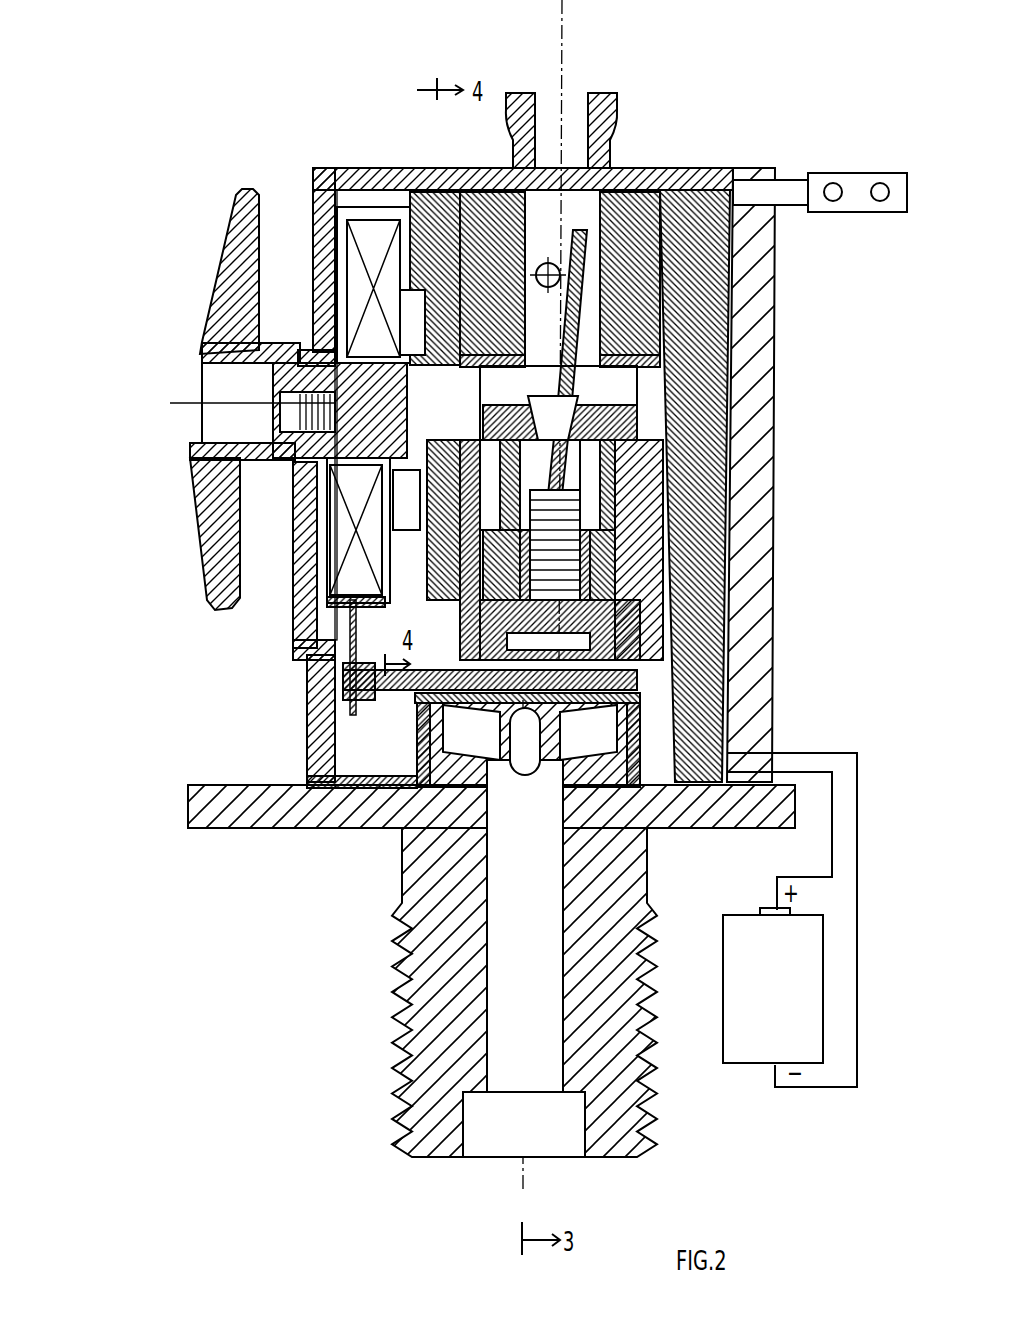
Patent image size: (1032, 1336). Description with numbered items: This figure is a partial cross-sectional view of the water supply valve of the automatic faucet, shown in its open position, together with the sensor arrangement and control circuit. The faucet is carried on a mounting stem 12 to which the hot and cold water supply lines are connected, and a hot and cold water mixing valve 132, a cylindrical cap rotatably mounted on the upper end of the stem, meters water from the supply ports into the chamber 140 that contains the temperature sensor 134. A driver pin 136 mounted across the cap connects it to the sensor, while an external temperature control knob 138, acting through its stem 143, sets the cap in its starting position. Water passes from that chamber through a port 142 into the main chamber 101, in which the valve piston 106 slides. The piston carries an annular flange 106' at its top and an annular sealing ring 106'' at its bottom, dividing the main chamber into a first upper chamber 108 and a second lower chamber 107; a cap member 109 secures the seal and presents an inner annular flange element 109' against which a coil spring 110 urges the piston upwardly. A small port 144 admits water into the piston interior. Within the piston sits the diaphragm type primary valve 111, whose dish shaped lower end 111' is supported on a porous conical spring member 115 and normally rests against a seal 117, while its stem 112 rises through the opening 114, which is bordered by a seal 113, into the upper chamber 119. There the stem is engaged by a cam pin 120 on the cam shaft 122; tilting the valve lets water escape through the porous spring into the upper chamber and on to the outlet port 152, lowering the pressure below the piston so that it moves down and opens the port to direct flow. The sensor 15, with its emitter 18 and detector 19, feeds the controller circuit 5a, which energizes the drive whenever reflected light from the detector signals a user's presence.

The mounting stem 12 is at (433, 865).
The sensor 15 is at (898, 180).
The emitter 18 is at (828, 180).
The detector 19 is at (875, 180).
The controller circuit 5a is at (750, 183).
The main chamber 101 is at (615, 403).
The valve piston 106 is at (713, 485).
The annular flange 106' is at (731, 550).
The annular sealing ring 106'' is at (705, 627).
The second lower chamber 107 is at (598, 574).
The first upper chamber 108 is at (533, 550).
The cap member 109 is at (718, 590).
The inner annular flange element 109' is at (710, 565).
The coil spring 110 is at (655, 622).
The diaphragm type primary valve 111 is at (637, 492).
The dish shaped lower end 111' is at (746, 451).
The stem 112 is at (616, 170).
The seal 113 is at (630, 358).
The opening 114 is at (650, 318).
The porous conical spring member 115 is at (595, 568).
The seal 117 is at (618, 436).
The upper chamber 119 is at (540, 252).
The cam pin 120 is at (548, 272).
The cam shaft 122 is at (440, 186).
The hot and cold water mixing valve 132 is at (415, 700).
The temperature sensor 134 is at (300, 625).
The driver pin 136 is at (345, 680).
The temperature control knob 138 is at (238, 214).
The chamber 140 is at (370, 758).
The port 142 is at (352, 268).
The stem 143 is at (395, 468).
The small port 144 is at (640, 672).
The outlet port 152 is at (578, 138).